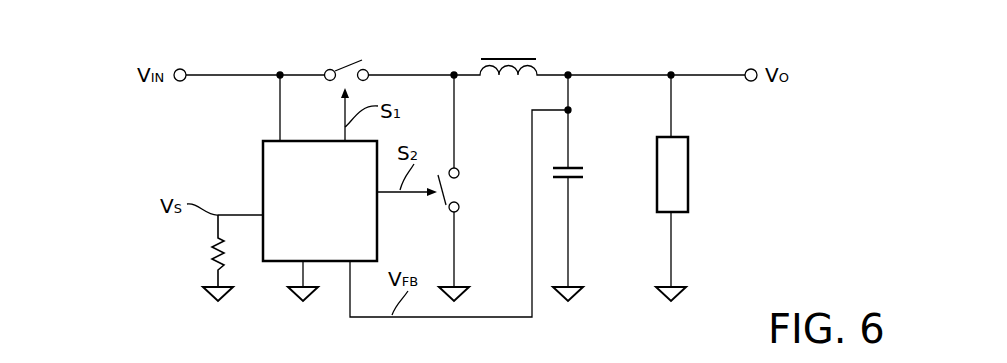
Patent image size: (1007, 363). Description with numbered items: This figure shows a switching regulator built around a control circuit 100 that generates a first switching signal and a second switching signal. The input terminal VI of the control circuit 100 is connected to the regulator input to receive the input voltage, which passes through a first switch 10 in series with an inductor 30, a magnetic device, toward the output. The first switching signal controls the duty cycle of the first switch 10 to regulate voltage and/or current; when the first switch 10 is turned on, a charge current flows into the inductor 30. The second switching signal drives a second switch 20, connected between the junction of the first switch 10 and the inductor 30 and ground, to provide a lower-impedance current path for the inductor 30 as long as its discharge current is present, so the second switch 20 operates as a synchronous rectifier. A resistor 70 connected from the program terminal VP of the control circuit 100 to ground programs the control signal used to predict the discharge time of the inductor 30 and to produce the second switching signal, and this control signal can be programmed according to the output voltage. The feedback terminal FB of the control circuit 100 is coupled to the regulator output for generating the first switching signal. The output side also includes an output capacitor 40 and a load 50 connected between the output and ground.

The first switch 10 is at (342, 52).
The second switch 20 is at (462, 190).
The inductor 30 is at (511, 56).
The output capacitor 40 is at (587, 172).
The load 50 is at (690, 176).
The resistor 70 is at (208, 253).
The control circuit 100 is at (256, 160).